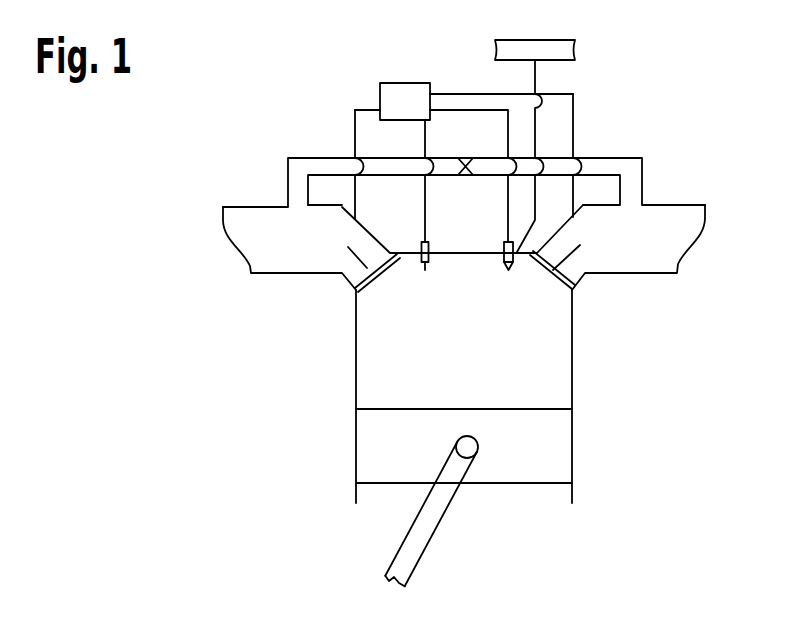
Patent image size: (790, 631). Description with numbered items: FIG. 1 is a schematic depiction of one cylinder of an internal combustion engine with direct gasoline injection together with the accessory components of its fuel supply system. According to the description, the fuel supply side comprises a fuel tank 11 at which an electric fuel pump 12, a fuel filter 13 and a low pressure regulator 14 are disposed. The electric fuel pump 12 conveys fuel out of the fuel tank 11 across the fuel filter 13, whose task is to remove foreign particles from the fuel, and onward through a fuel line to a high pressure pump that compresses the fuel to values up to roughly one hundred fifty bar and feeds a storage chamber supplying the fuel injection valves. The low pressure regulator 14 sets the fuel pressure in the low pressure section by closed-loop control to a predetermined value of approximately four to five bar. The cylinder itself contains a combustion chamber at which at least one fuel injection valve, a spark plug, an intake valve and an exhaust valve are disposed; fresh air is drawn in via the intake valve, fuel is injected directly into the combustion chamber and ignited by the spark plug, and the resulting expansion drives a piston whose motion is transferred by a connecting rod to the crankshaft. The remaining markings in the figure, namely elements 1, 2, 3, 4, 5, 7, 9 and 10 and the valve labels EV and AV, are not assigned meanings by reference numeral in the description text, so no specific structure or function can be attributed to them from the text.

The internal combustion engine 1 is at (604, 377).
The cylinder / combustion chamber 2 is at (375, 378).
The piston 3 is at (535, 473).
The connecting rod 4 is at (408, 553).
The intake port 5 is at (328, 278).
The exhaust port 7 is at (607, 279).
The cylinder head 9 is at (604, 166).
The sensor 10 is at (468, 177).
The fuel tank 11 is at (428, 261).
The electric fuel pump 12 is at (506, 264).
The fuel filter 13 is at (537, 72).
The low pressure regulator 14 is at (402, 95).
The intake valve EV is at (373, 279).
The exhaust valve AV is at (568, 294).